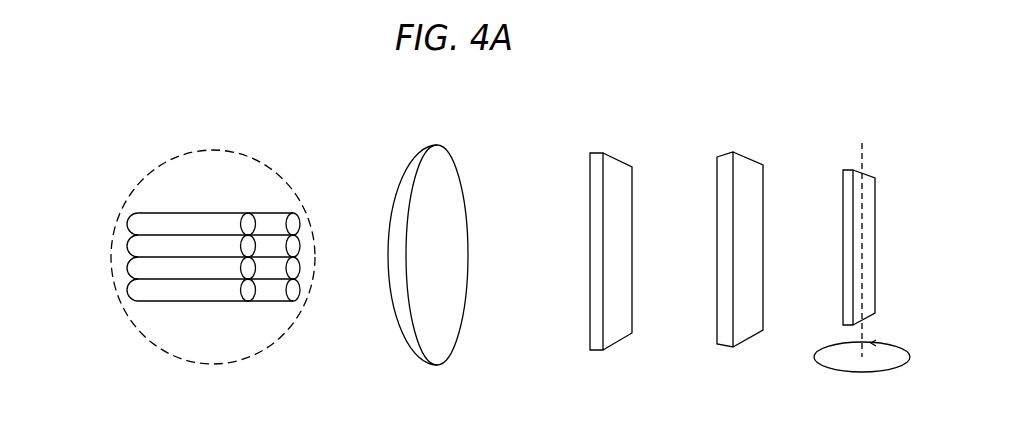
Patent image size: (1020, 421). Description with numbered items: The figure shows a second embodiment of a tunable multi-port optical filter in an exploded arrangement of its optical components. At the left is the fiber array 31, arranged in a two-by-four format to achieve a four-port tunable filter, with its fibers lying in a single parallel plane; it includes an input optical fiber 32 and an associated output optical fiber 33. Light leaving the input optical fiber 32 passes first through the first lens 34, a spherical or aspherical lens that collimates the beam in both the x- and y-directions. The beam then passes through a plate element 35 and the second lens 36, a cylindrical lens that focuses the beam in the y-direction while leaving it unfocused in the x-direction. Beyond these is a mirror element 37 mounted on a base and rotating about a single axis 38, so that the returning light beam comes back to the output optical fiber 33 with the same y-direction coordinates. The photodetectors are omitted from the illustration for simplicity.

The fiber array 31 is at (197, 151).
The input optical fiber 32 is at (127, 227).
The output optical fiber 33 is at (298, 222).
The first lens 34 is at (420, 152).
The first plate 35 is at (591, 165).
The second lens 36 is at (717, 176).
The rotating plate 37 is at (876, 218).
The rotation axis 38 is at (866, 157).